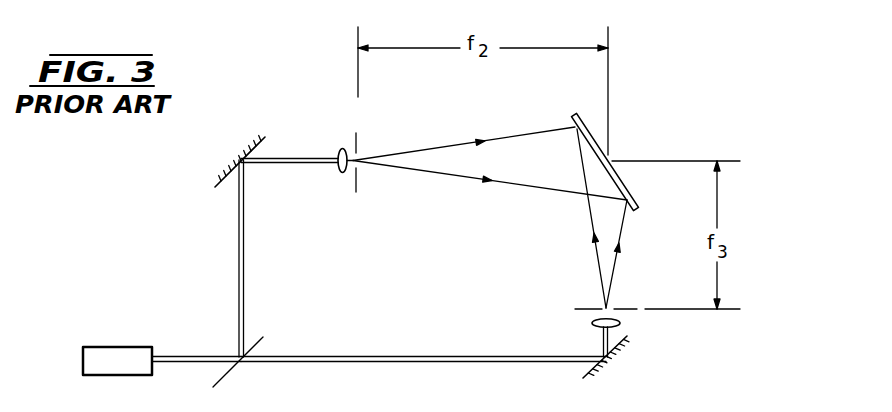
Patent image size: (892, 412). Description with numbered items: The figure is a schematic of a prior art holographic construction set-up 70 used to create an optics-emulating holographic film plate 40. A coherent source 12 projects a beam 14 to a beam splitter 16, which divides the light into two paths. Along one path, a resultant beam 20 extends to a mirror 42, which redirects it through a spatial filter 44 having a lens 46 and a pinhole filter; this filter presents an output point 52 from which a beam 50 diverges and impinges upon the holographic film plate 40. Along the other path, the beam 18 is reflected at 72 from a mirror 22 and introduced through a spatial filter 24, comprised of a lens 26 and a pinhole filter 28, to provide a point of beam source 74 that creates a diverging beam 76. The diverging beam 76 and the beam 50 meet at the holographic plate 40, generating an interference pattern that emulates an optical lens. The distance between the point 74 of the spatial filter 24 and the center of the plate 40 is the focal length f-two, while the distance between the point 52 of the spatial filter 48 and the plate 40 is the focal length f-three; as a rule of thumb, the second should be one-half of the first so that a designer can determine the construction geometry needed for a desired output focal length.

The coherent source 12 is at (103, 357).
The beam 14 is at (203, 357).
The beam splitter 16 is at (258, 347).
The beam 18 is at (244, 270).
The resultant beam 20 is at (403, 362).
The mirror 22 is at (264, 140).
The spatial filter 24 is at (408, 136).
The lens 26 is at (338, 167).
The pinhole filter 28 is at (358, 145).
The holographic film plate 40 is at (595, 140).
The mirror 42 is at (590, 370).
The spatial filter 44 is at (686, 320).
The lens 46 is at (618, 323).
The spatial filter 48 is at (620, 307).
The beam 50 is at (603, 222).
The output point 52 is at (603, 307).
The set-up 70 is at (672, 60).
The reflection point 72 is at (299, 158).
The point of beam source 74 is at (359, 165).
The diverging beam 76 is at (462, 146).